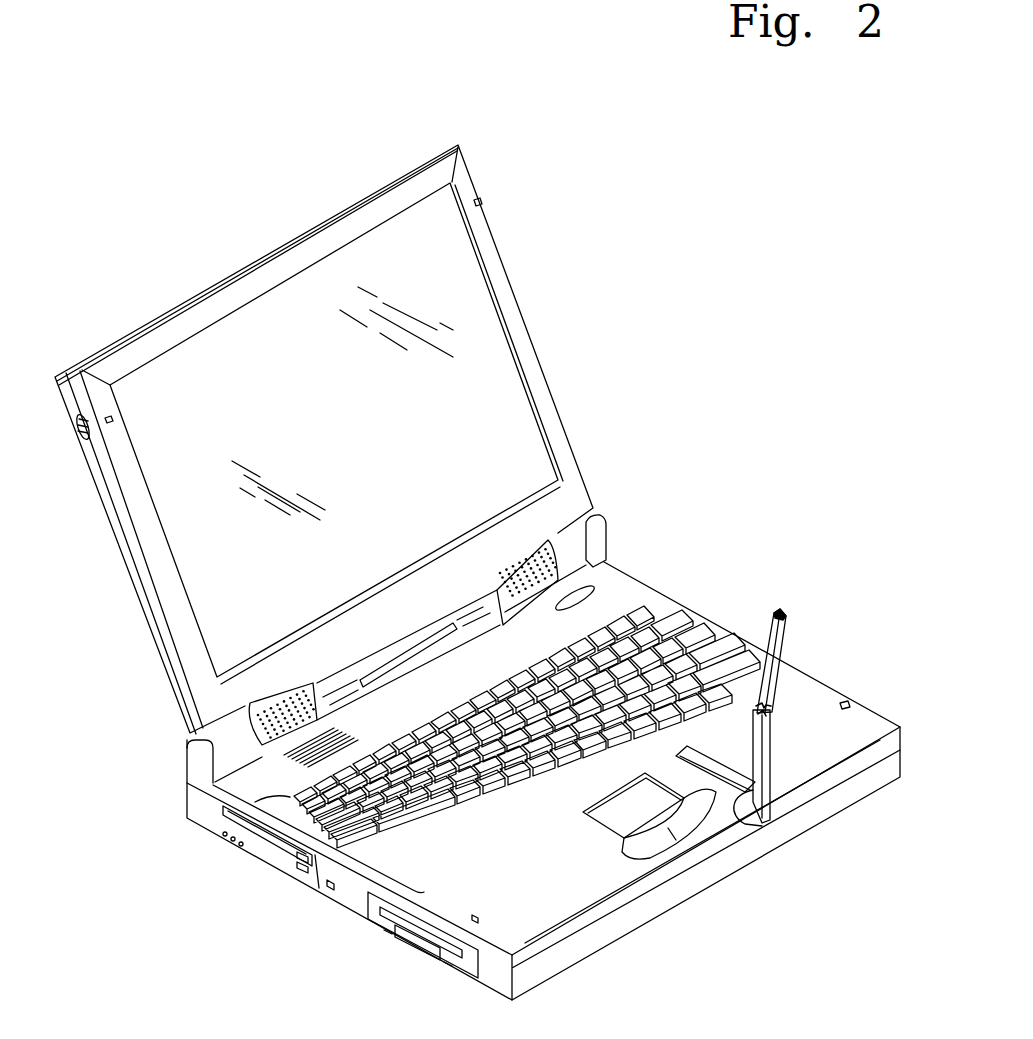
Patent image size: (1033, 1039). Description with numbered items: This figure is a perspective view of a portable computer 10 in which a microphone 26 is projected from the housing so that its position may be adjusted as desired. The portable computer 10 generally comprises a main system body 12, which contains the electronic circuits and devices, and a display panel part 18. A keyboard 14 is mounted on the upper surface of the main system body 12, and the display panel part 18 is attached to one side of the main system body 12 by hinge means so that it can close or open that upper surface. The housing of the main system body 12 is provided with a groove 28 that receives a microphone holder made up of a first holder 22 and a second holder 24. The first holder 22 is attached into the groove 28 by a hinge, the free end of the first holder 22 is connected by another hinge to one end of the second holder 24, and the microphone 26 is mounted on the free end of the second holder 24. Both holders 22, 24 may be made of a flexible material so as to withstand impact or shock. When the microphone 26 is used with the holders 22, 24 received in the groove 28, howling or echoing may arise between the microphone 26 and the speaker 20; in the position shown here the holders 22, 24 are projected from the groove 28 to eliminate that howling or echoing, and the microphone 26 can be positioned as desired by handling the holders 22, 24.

The portable computer 10 is at (759, 258).
The main system body 12 is at (553, 764).
The keyboard 14 is at (697, 638).
The display panel part 18 is at (324, 445).
The speaker 20 is at (522, 550).
The first holder 22 is at (763, 752).
The second holder 24 is at (787, 637).
The microphone 26 is at (778, 608).
The groove 28 is at (733, 790).